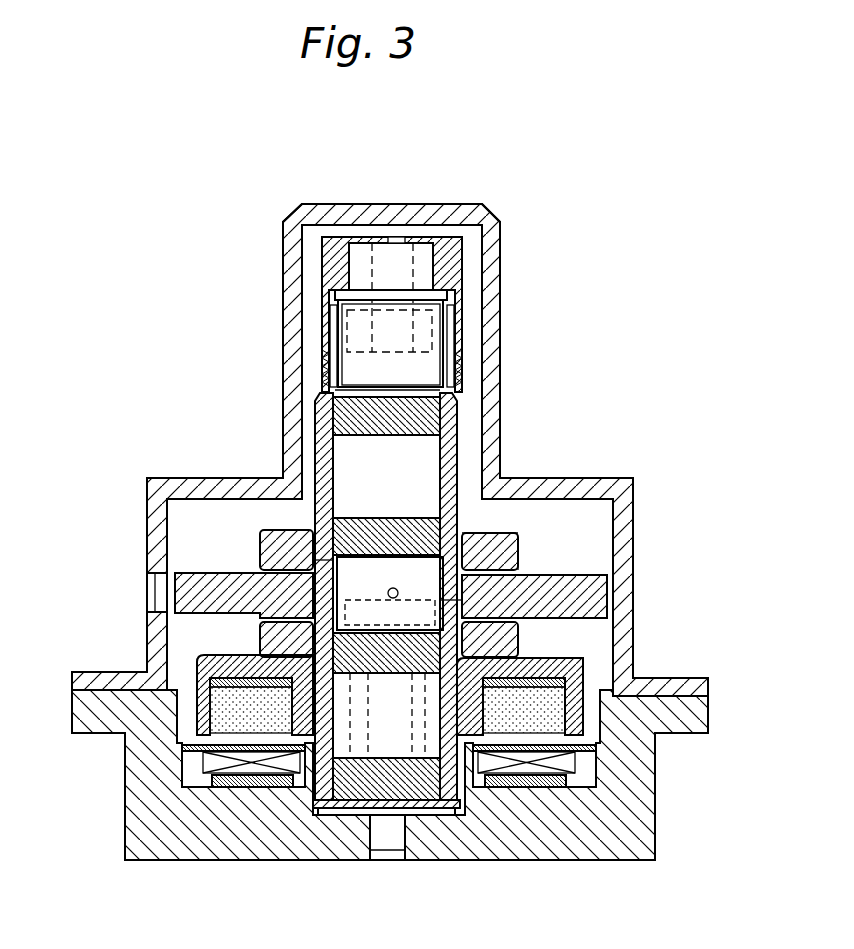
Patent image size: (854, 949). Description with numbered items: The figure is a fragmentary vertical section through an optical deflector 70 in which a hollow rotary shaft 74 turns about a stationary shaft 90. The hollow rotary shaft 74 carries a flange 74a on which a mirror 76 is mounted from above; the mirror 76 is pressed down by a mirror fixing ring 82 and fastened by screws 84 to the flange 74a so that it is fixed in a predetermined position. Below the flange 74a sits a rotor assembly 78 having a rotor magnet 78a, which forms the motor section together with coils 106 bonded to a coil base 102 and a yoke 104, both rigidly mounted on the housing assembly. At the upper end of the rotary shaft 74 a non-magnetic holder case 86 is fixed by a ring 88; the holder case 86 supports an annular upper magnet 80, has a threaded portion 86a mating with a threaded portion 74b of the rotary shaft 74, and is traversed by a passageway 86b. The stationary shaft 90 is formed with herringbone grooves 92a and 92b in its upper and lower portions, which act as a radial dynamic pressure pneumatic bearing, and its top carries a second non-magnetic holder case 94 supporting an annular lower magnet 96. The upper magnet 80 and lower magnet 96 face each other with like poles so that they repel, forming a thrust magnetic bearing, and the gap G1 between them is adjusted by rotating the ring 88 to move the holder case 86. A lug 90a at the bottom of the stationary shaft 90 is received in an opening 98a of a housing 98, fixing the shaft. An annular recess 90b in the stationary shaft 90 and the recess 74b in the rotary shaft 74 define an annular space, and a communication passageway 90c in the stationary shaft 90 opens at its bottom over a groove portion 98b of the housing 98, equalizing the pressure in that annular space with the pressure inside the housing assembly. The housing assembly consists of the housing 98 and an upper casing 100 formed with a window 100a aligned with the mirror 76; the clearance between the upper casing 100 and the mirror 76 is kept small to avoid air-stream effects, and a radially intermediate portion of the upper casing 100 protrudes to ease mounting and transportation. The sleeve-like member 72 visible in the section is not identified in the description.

The optical deflector 70 is at (567, 194).
The bearing sleeve 72 is at (318, 413).
The hollow rotary shaft 74 is at (327, 467).
The flange 74a is at (518, 640).
The threaded portion 74b is at (333, 327).
The mirror 76 is at (608, 580).
The rotor assembly 78 is at (200, 640).
The rotor magnet 78a is at (165, 672).
The annular upper magnet 80 is at (363, 250).
The mirror fixing ring 82 is at (517, 553).
The screws 84 is at (493, 537).
The holder case 86 is at (457, 232).
The threaded portion 86a is at (482, 318).
The passageway 86b is at (396, 237).
The ring 88 is at (485, 350).
The stationary shaft 90 is at (352, 450).
The lug 90a is at (393, 835).
The annular recess 90b is at (560, 603).
The communication passageway 90c is at (300, 562).
The herringbone grooves 92a is at (413, 523).
The herringbone grooves 92b is at (470, 795).
The holder case 94 is at (345, 382).
The annular lower magnet 96 is at (345, 338).
The housing 98 is at (622, 812).
The opening 98a is at (378, 855).
The groove portion 98b is at (340, 818).
The upper casing 100 is at (162, 493).
The window 100a is at (150, 590).
The coil base 102 is at (200, 748).
The yoke 104 is at (215, 781).
The coils 106 is at (208, 763).
The gap G1 is at (483, 290).